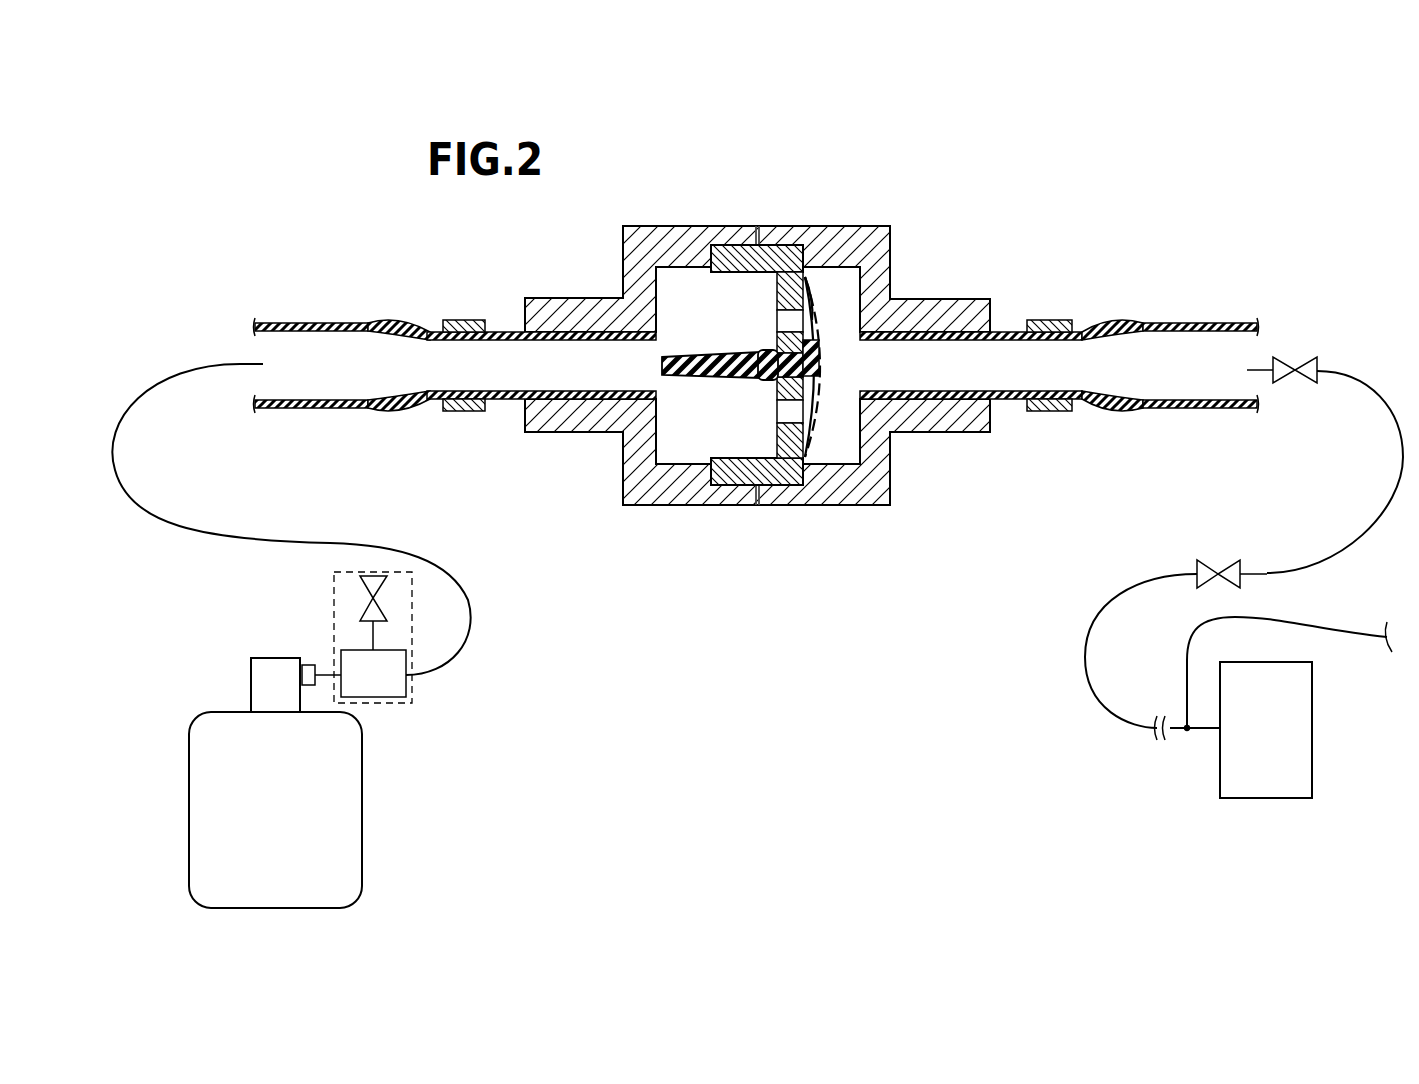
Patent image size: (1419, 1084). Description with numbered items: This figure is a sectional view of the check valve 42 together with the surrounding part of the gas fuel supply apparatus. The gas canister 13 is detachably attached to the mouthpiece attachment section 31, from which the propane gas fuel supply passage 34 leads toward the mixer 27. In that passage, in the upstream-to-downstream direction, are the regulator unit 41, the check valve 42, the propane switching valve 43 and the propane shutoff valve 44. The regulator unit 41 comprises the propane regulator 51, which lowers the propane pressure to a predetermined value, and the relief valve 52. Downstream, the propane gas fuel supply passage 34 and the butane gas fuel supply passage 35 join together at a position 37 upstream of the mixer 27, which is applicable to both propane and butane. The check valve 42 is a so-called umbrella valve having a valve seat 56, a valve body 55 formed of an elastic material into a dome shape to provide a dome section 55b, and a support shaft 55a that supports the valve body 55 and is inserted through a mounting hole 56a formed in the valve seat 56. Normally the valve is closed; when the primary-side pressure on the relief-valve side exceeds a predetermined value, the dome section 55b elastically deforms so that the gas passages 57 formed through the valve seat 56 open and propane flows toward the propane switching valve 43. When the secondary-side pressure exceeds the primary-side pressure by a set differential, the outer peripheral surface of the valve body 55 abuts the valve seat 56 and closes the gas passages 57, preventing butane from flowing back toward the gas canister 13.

The gas canister 13 is at (203, 847).
The mixer 27 is at (1303, 731).
The mouthpiece attachment section 31 is at (310, 670).
The propane gas fuel supply passage 34 is at (756, 346).
The butane gas fuel supply passage 35 is at (1345, 627).
The joining position 37 is at (1187, 733).
The regulator unit 41 is at (480, 637).
The check valve 42 is at (865, 227).
The propane switching valve 43 is at (1297, 357).
The propane shutoff valve 44 is at (1227, 560).
The propane regulator 51 is at (402, 687).
The relief valve 52 is at (385, 588).
The valve body 55 is at (820, 380).
The support shaft 55a is at (753, 380).
The dome section 55b is at (820, 287).
The valve seat 56 is at (777, 418).
The mounting hole 56a is at (770, 352).
The gas passages 57 is at (777, 323).